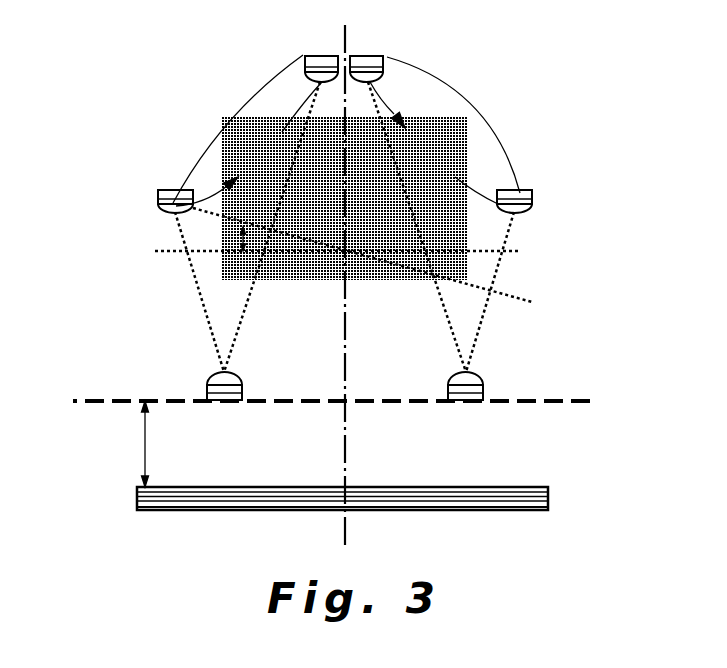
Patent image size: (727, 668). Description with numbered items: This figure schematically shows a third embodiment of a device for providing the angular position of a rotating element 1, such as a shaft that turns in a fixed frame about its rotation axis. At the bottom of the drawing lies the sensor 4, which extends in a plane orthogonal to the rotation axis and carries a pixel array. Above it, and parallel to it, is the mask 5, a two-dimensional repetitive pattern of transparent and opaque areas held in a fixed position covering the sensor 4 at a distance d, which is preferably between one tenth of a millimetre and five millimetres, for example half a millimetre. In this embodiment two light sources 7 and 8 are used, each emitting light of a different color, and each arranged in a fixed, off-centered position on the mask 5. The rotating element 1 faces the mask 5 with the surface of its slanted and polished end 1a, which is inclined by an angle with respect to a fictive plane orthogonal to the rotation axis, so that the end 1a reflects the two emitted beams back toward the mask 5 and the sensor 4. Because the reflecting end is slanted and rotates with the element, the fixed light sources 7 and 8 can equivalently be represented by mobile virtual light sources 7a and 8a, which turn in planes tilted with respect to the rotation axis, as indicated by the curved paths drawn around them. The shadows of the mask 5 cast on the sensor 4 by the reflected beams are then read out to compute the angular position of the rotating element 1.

The rotating element 1 is at (460, 135).
The slanted and polished end 1a is at (400, 267).
The sensor 4 is at (458, 495).
The mask 5 is at (560, 403).
The light source 7 is at (478, 392).
The mobile virtual light source 7a is at (381, 60).
The light source 8 is at (213, 392).
The mobile virtual light source 8a is at (316, 62).
The distance d is at (138, 444).